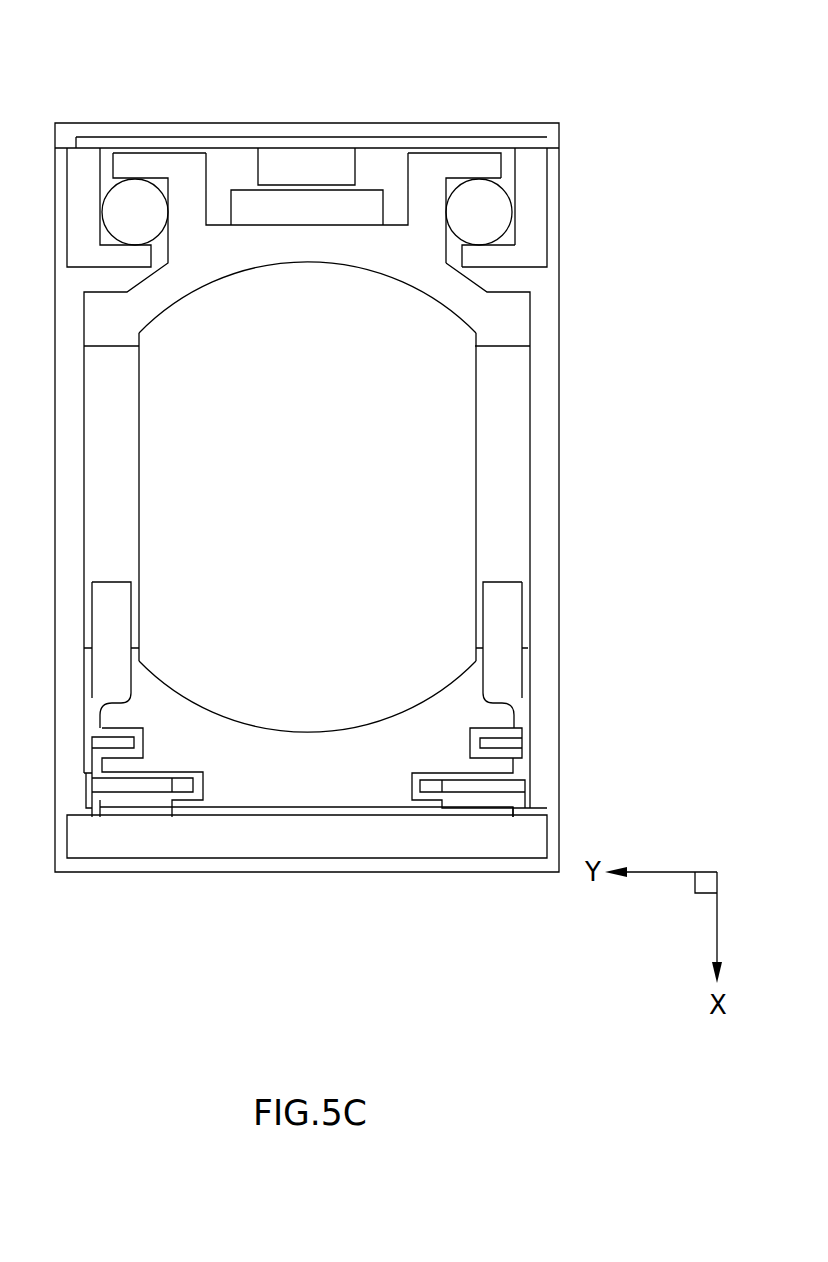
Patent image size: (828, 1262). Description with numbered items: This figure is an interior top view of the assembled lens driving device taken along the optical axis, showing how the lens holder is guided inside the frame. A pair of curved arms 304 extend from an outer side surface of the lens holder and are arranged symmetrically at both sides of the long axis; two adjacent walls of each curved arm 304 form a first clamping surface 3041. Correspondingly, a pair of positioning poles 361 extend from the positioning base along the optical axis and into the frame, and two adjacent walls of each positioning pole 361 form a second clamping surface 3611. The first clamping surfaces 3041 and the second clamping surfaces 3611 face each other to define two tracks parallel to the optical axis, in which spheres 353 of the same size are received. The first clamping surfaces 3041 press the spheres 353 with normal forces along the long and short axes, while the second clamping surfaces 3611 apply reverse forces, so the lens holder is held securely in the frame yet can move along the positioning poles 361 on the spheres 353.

The curved arm 304 is at (423, 178).
The first clamping surface 3041 is at (458, 177).
The sphere 353 is at (485, 204).
The positioning pole 361 is at (531, 210).
The second clamping surface 3611 is at (498, 247).